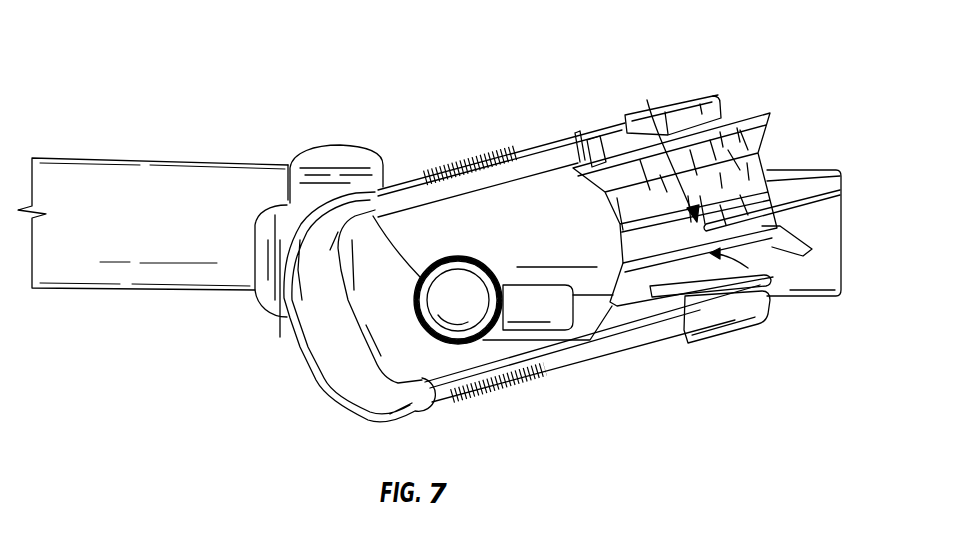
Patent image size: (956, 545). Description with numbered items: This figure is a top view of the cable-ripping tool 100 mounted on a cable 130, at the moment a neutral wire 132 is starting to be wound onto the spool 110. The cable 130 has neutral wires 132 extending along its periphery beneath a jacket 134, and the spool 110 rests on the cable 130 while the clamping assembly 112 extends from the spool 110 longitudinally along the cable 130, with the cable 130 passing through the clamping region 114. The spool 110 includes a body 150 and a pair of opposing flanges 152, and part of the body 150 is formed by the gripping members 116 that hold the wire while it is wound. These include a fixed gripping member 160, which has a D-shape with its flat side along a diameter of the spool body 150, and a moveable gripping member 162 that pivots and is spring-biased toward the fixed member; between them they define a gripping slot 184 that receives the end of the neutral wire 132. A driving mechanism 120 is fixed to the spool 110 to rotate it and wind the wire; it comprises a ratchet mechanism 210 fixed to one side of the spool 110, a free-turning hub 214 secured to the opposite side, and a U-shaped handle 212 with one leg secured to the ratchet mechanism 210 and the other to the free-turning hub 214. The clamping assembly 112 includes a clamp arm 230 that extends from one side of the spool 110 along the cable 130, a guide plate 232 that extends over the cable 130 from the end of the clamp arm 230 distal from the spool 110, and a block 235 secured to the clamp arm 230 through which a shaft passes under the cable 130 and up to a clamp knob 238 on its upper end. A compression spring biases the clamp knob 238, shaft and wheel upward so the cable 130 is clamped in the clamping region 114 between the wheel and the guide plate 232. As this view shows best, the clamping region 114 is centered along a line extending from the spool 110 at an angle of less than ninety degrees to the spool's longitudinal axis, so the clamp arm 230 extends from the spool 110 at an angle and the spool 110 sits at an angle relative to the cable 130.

The cable-ripping tool 100 is at (533, 94).
The spool 110 is at (725, 143).
The clamping assembly 112 is at (353, 118).
The clamping region 114 is at (272, 190).
The gripping member 116 is at (765, 242).
The driving mechanism 120 is at (698, 84).
The cable 130 is at (62, 158).
The neutral wire 132 is at (785, 200).
The jacket 134 is at (838, 188).
The body 150 is at (578, 136).
The flange 152 is at (724, 140).
The fixed gripping member 160 is at (778, 192).
The moveable gripping member 162 is at (588, 238).
The gripping slot 184 is at (639, 210).
The ratchet mechanism 210 is at (745, 326).
The handle 212 is at (492, 158).
The free-turning hub 214 is at (670, 106).
The clamp arm 230 is at (670, 297).
The guide plate 232 is at (266, 298).
The block 235 is at (556, 326).
The clamp knob 238 is at (476, 258).